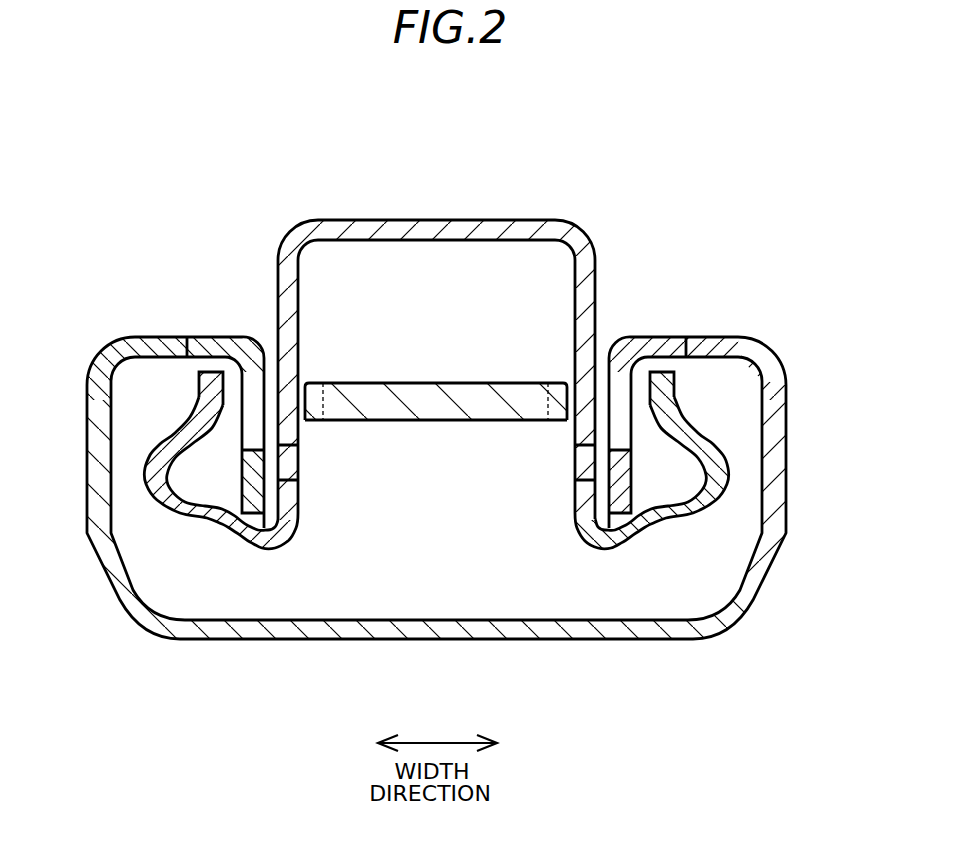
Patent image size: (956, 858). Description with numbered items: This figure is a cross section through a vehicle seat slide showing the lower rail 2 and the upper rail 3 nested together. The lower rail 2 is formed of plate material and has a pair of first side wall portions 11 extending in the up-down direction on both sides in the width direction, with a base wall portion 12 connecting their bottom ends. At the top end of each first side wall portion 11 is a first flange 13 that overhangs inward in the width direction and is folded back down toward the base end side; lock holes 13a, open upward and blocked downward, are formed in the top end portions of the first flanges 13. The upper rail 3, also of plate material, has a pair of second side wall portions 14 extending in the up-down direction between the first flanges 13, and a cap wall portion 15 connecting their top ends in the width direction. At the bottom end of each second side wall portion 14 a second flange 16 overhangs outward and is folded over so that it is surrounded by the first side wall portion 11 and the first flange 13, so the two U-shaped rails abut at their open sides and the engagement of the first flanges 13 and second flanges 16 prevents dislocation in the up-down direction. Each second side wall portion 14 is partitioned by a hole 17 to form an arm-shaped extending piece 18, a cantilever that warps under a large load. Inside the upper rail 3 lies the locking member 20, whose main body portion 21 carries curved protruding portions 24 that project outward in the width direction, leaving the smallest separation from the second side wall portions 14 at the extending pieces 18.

The lower rail 2 is at (607, 645).
The upper rail 3 is at (494, 216).
The first side wall portion 11 is at (92, 457).
The base wall portion 12 is at (482, 640).
The first flange 13 is at (153, 335).
The lock hole 13a is at (197, 337).
The second side wall portion 14 is at (277, 267).
The cap wall portion 15 is at (437, 219).
The second flange 16 is at (160, 438).
The hole 17 is at (293, 470).
The extending piece 18 is at (277, 323).
The locking member 20 is at (416, 380).
The main body portion 21 is at (423, 421).
The protruding portion 24 is at (301, 378).